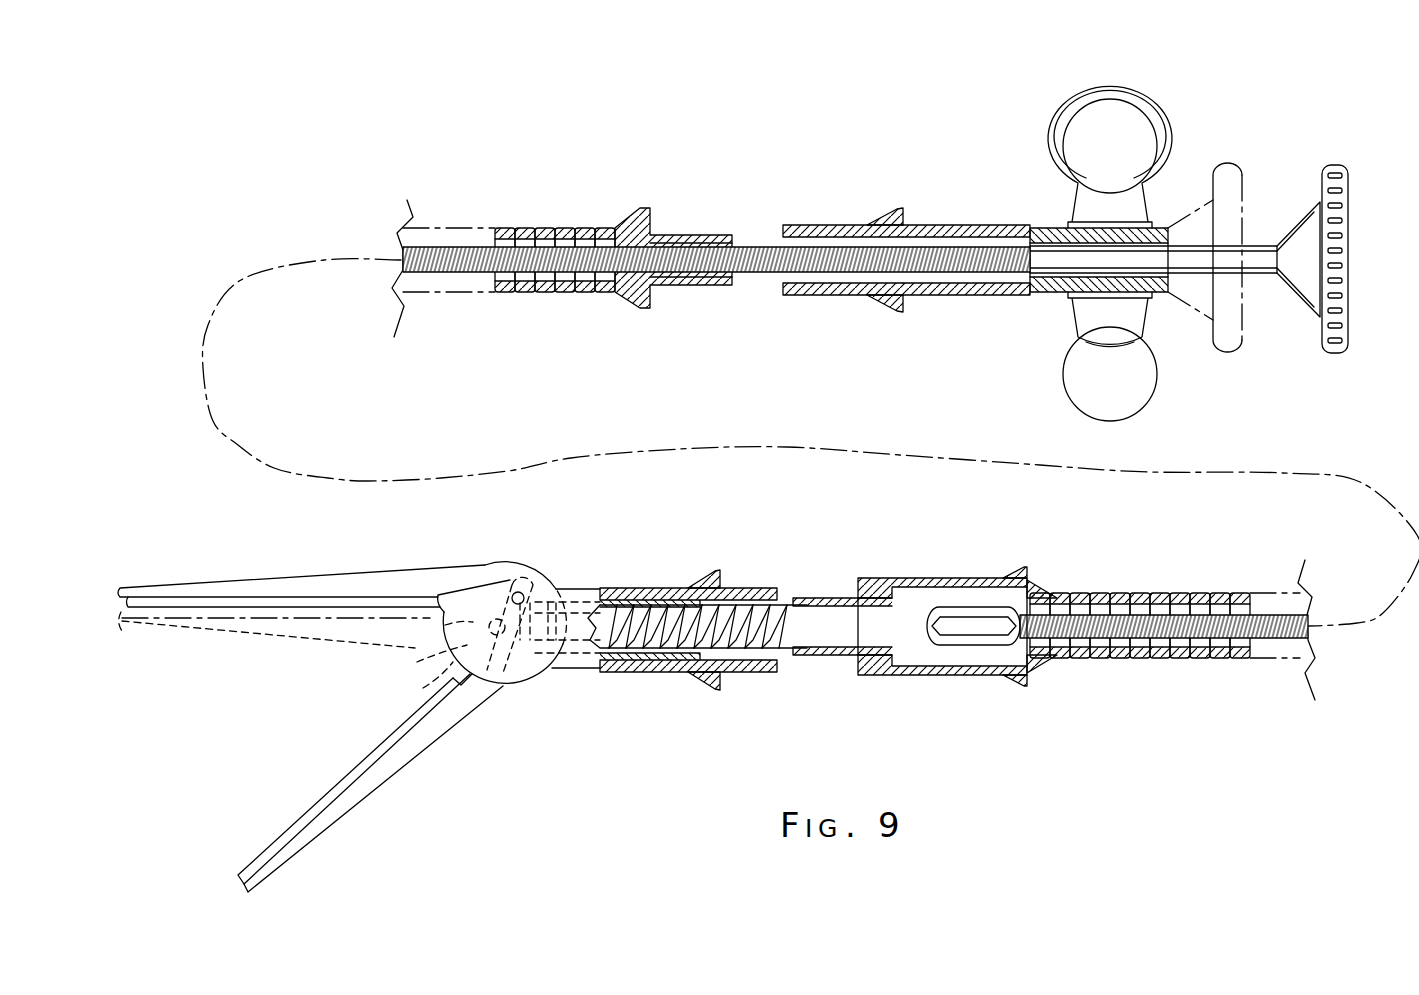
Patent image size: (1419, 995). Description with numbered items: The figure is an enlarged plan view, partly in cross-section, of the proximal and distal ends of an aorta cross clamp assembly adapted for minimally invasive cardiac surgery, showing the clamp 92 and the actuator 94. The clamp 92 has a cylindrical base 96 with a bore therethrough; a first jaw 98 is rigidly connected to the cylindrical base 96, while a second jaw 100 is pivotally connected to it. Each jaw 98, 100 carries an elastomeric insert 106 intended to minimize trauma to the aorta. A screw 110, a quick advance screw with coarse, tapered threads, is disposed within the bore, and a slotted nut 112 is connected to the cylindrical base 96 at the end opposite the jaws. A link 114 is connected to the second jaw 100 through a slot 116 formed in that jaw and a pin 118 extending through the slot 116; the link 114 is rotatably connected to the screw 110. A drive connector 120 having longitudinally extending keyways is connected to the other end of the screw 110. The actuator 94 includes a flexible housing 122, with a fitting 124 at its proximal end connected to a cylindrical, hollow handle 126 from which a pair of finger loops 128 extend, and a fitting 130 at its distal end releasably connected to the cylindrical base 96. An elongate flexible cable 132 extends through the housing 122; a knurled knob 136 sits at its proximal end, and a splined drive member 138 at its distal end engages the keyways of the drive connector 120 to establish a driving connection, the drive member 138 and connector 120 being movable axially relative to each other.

The clamp 92 is at (553, 553).
The actuator 94 is at (858, 182).
The cylindrical base 96 is at (635, 588).
The first jaw 98 is at (253, 575).
The second jaw 100 is at (365, 790).
The elastomeric insert 106 is at (268, 607).
The screw 110 is at (592, 660).
The slotted nut 112 is at (712, 571).
The link 114 is at (545, 665).
The slot 116 is at (423, 688).
The pin 118 is at (417, 662).
The drive connector 120 is at (842, 638).
The flexible housing 122 is at (523, 232).
The fitting 124 is at (812, 226).
The handle 126 is at (967, 237).
The finger loops 128 is at (1135, 95).
The fitting 130 is at (960, 675).
The flexible cable 132 is at (440, 247).
The knurled knob 136 is at (1334, 168).
The splined drive member 138 is at (978, 610).